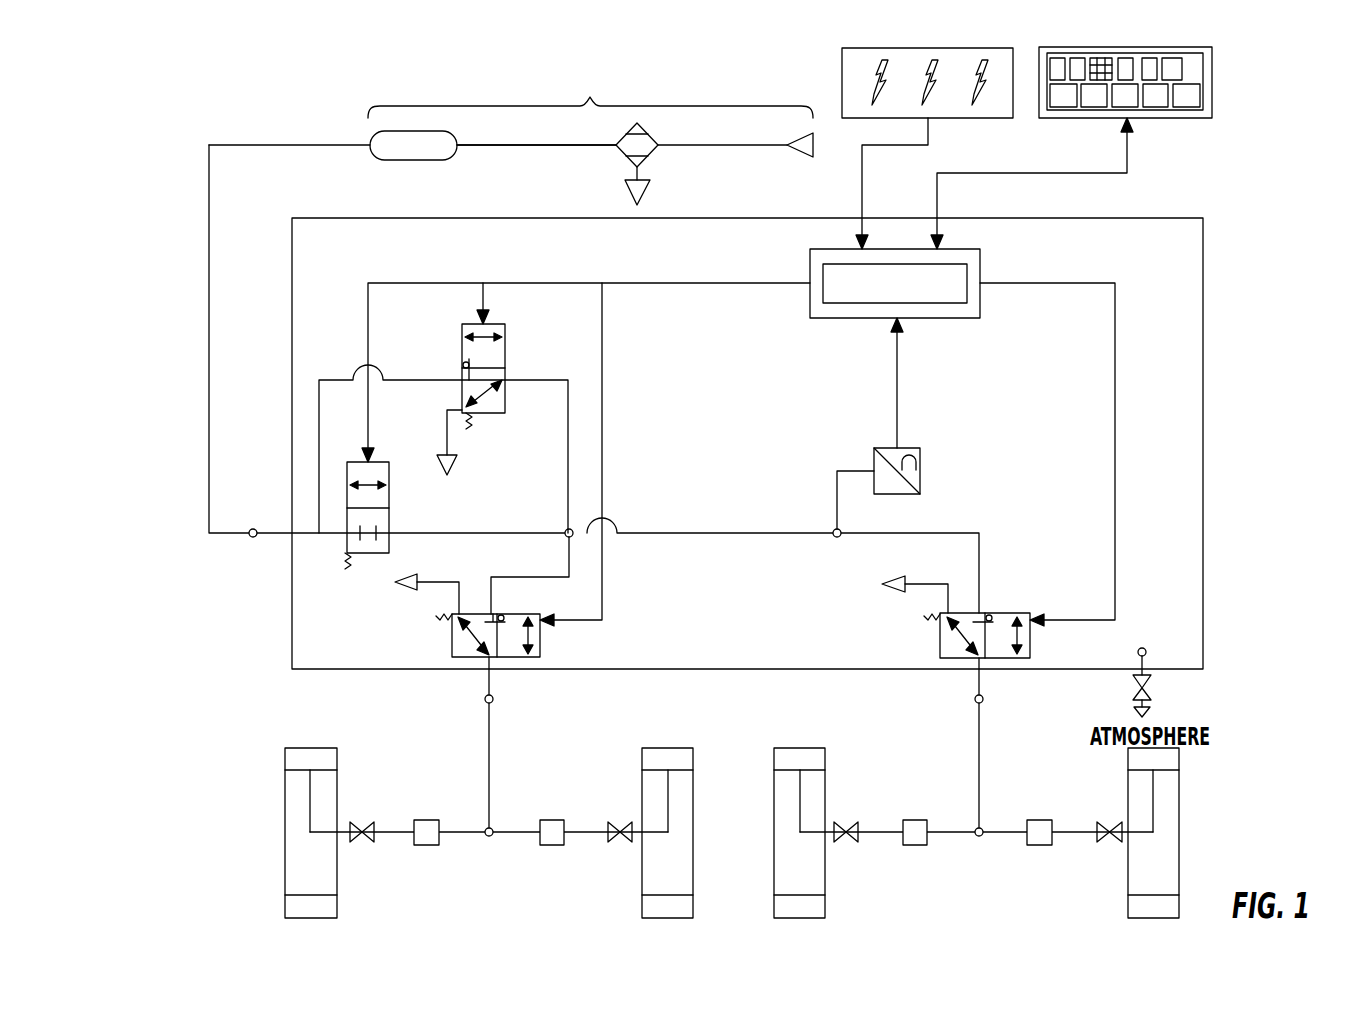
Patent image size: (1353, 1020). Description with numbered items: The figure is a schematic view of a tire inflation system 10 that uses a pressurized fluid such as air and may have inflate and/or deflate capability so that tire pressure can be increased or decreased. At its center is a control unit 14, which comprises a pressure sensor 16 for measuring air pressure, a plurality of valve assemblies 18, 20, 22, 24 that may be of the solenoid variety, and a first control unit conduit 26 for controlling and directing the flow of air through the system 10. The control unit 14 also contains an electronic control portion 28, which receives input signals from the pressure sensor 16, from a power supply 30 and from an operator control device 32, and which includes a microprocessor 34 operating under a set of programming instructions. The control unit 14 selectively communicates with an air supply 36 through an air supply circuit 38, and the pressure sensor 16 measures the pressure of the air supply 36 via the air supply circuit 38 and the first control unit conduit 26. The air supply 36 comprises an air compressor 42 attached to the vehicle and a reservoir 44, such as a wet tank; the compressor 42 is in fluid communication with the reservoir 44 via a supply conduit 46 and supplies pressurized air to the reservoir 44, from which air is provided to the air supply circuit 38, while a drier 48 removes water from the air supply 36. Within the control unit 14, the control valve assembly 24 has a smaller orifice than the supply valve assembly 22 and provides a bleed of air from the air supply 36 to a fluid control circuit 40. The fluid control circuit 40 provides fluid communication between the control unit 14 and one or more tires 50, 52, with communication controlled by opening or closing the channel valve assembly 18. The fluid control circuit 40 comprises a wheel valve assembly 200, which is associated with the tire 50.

The tire inflation system 10 is at (1228, 170).
The control unit 14 is at (1185, 285).
The pressure sensor 16 is at (874, 462).
The channel valve assembly 18 is at (452, 633).
The valve assembly 20 is at (940, 636).
The supply valve assembly 22 is at (389, 471).
The control valve assembly 24 is at (490, 415).
The first control unit conduit 26 is at (727, 532).
The electronic control portion 28 is at (808, 272).
The power supply 30 is at (937, 46).
The operator control device 32 is at (1093, 46).
The microprocessor 34 is at (968, 272).
The air supply 36 is at (511, 133).
The air supply circuit 38 is at (207, 395).
The fluid control circuit 40 is at (486, 735).
The air compressor 42 is at (790, 148).
The reservoir 44 is at (404, 160).
The supply conduit 46 is at (545, 147).
The drier 48 is at (650, 155).
The tire 50 is at (318, 750).
The tire 52 is at (648, 752).
The wheel valve assembly 200 is at (365, 826).